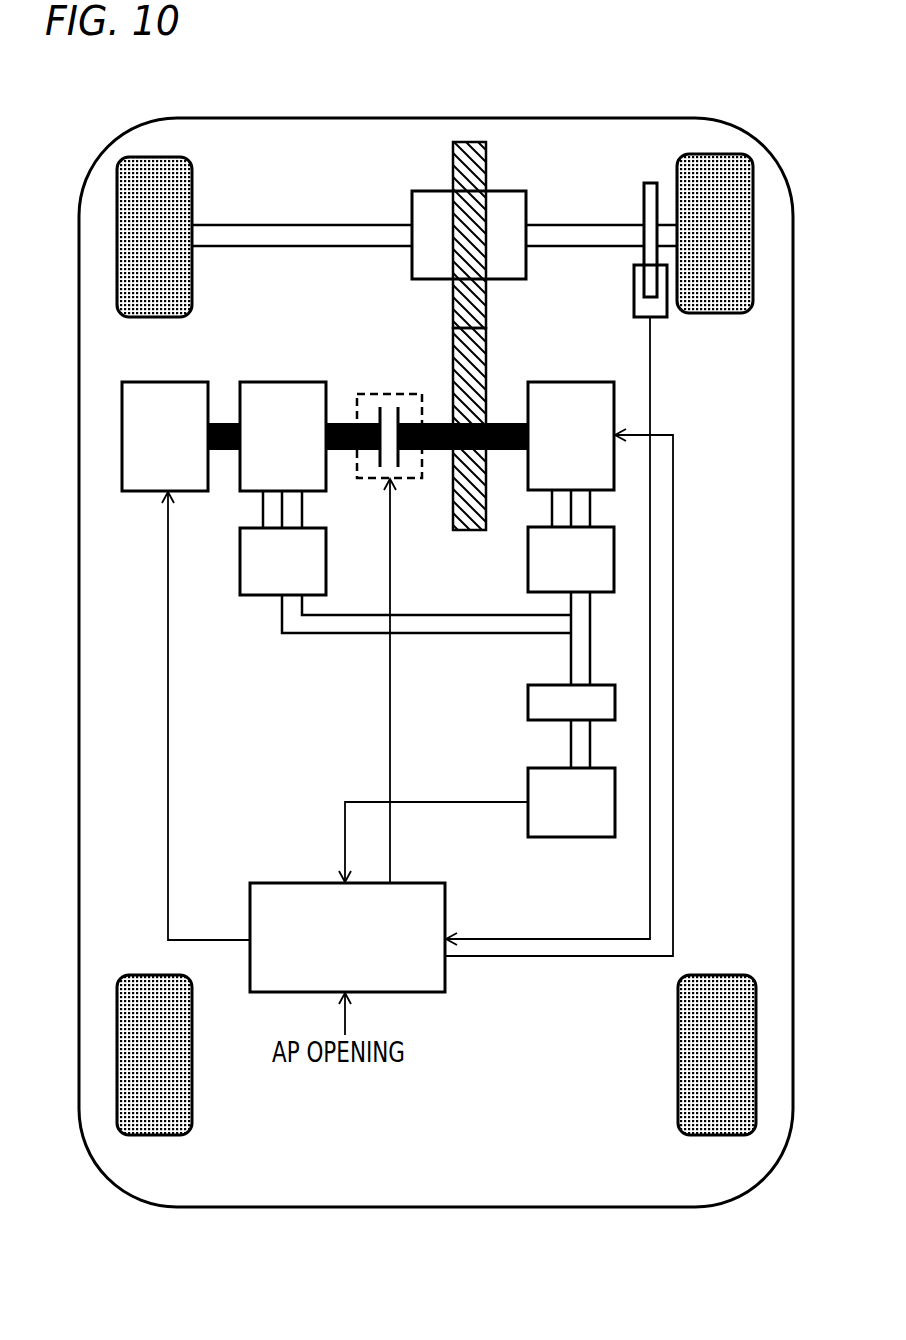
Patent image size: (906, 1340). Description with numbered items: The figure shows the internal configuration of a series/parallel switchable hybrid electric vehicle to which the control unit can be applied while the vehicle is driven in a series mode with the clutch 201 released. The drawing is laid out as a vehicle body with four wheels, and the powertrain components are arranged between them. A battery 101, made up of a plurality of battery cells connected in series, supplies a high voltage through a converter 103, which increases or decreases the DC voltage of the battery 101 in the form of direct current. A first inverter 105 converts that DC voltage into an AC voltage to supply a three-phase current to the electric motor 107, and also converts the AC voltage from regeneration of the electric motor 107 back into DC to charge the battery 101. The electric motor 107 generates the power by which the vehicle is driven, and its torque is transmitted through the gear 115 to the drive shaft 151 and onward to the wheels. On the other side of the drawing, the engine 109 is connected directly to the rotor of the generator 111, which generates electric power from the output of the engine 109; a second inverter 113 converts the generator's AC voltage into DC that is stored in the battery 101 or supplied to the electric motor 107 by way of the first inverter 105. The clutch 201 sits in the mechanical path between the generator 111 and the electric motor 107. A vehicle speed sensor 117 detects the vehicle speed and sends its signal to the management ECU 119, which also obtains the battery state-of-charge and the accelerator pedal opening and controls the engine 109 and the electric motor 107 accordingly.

The battery 101 is at (615, 803).
The converter 103 is at (615, 705).
The first inverter 105 is at (614, 560).
The electric motor 107 is at (614, 410).
The engine 109 is at (122, 410).
The generator 111 is at (270, 382).
The second inverter 113 is at (240, 560).
The gearbox 115 is at (412, 208).
The vehicle speed sensor 117 is at (634, 296).
The management ECU 119 is at (445, 973).
The drive shaft 151 is at (253, 224).
The clutch 201 is at (375, 392).